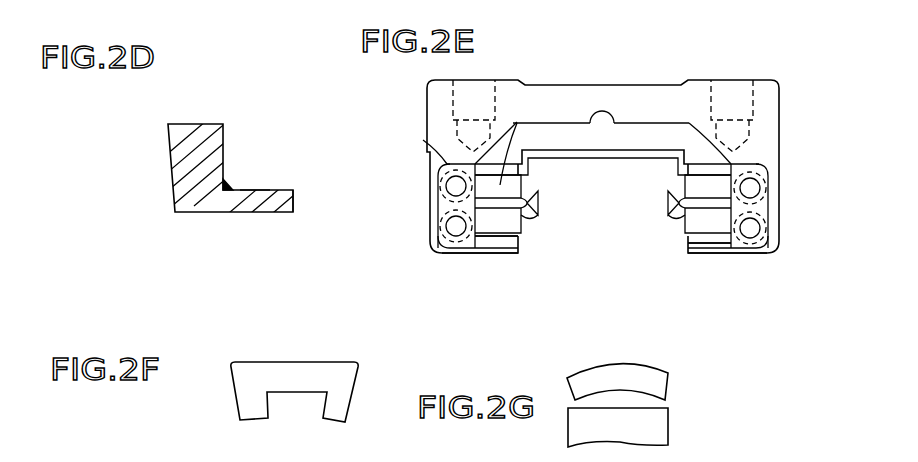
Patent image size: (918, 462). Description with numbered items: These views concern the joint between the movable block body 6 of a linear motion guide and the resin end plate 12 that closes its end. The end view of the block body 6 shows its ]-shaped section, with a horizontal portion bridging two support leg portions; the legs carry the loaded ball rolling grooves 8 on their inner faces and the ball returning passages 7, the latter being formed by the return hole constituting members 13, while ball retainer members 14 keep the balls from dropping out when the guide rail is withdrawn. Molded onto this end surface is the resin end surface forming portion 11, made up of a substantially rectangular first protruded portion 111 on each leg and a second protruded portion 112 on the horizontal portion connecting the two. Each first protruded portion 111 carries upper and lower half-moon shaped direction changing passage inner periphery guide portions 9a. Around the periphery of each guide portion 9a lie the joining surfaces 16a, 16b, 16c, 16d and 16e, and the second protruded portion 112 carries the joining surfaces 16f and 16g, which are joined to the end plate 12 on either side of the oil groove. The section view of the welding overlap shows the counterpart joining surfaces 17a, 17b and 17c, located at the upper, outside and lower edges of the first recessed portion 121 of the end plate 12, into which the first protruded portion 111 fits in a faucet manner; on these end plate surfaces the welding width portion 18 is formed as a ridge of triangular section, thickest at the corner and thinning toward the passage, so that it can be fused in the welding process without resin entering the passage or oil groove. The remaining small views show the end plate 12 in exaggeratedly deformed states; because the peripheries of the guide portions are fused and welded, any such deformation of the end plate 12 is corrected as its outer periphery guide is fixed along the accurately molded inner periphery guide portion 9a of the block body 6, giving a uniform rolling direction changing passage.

In FIG. 2E, the movable block body 6 is at (622, 85).
In FIG. 2G, the movable block body 6 is at (668, 430).
In FIG. 2E, the ball returning passage 7 is at (450, 192).
In FIG. 2E, the loaded ball rolling groove 8 is at (520, 187).
In FIG. 2E, the direction changing passage inner periphery guide portion 9a is at (512, 125).
In FIG. 2E, the end surface forming portion 11 is at (762, 158).
In FIG. 2F, the end plate 12 is at (297, 362).
In FIG. 2G, the end plate 12 is at (612, 363).
In FIG. 2E, the return hole constituting member 13 is at (467, 258).
In FIG. 2E, the ball retainer member 14 is at (538, 204).
In FIG. 2E, the joining surface 16a is at (472, 164).
In FIG. 2E, the joining surface 16b is at (448, 228).
In FIG. 2E, the joining surface 16c is at (476, 252).
In FIG. 2E, the joining surface 16d is at (511, 258).
In FIG. 2E, the joining surface 16e is at (536, 222).
In FIG. 2E, the joining surface 16f is at (622, 131).
In FIG. 2E, the joining surface 16g is at (620, 146).
In FIG. 2D, the joining surface 17a is at (349, 211).
In FIG. 2D, the joining surface 17b is at (276, 191).
In FIG. 2D, the joining surface 17c is at (349, 212).
In FIG. 2D, the welding width portion 18 is at (229, 185).
In FIG. 2E, the first protruded portion 111 is at (495, 254).
In FIG. 2E, the second protruded portion 112 is at (567, 123).
In FIG. 2D, the first recessed portion 121 is at (303, 156).